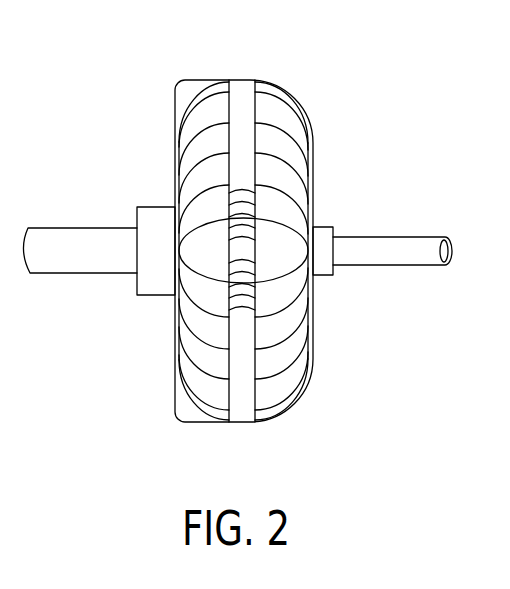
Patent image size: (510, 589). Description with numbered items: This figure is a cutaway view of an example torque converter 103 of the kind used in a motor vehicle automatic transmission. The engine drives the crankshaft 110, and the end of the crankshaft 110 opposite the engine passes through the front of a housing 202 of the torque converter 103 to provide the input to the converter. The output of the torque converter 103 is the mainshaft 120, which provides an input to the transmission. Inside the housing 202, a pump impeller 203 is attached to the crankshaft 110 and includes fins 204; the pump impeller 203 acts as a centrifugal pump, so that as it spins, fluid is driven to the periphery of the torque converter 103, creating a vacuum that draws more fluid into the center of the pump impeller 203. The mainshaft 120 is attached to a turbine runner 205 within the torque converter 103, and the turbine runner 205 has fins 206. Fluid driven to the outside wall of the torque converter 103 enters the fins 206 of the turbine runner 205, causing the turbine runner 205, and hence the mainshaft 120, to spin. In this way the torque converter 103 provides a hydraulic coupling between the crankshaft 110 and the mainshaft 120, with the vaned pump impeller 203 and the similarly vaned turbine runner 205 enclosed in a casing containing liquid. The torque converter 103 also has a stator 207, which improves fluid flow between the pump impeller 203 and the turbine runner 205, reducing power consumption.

The torque converter 103 is at (357, 143).
The crankshaft 110 is at (52, 228).
The mainshaft 120 is at (437, 237).
The housing 202 is at (193, 80).
The pump impeller 203 is at (205, 328).
The fins 204 is at (213, 382).
The turbine runner 205 is at (283, 389).
The fins 206 is at (283, 125).
The stator 207 is at (240, 291).